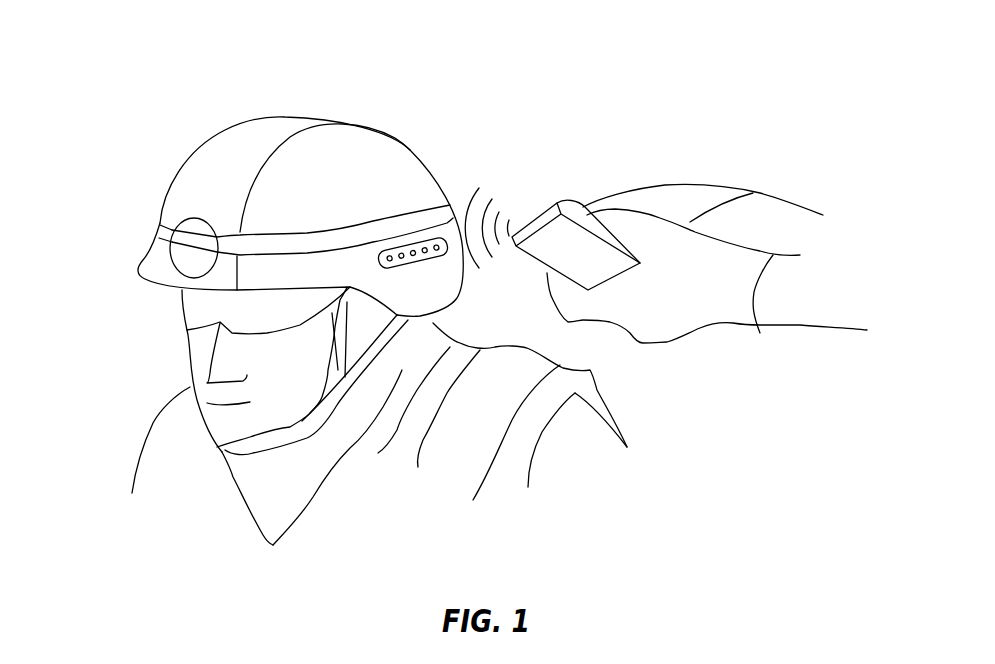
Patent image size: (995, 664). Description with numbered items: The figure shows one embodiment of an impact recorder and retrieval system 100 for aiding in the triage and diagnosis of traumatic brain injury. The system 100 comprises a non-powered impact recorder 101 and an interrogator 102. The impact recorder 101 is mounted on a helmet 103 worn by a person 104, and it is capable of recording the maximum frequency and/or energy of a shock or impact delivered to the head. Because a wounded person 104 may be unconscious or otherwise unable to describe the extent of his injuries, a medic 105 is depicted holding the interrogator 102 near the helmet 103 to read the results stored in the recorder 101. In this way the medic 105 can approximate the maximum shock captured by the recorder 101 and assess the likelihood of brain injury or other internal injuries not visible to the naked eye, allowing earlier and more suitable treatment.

The impact recorder and retrieval system 100 is at (101, 81).
The non-powered impact recorder 101 is at (450, 208).
The interrogator 102 is at (567, 200).
The helmet 103 is at (230, 132).
The person 104 is at (150, 423).
The medic 105 is at (793, 332).